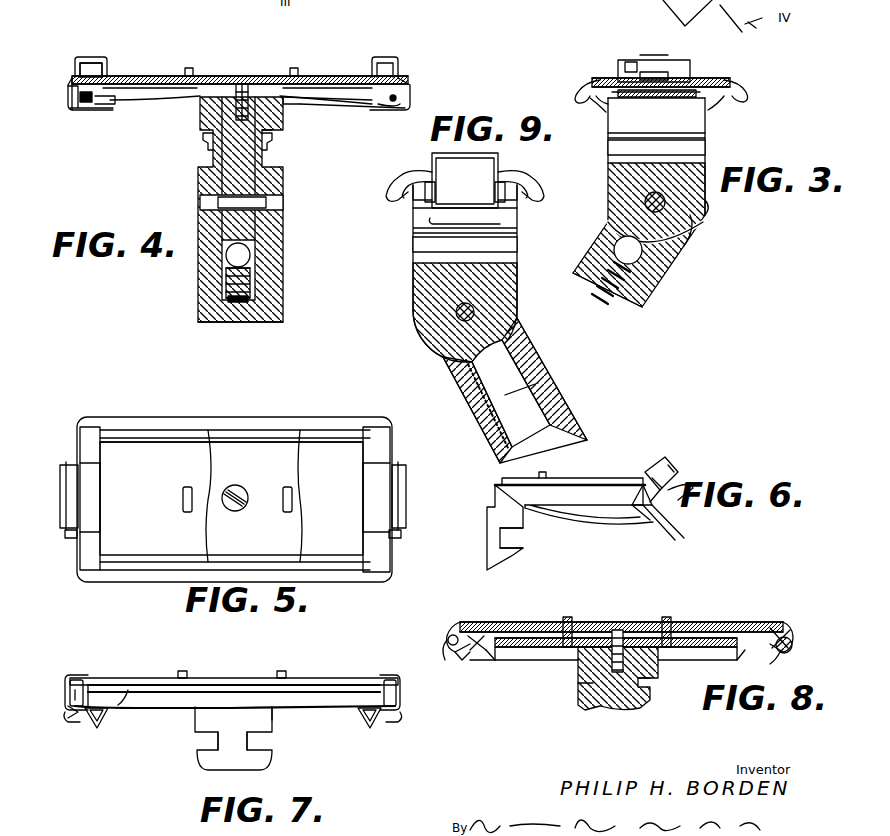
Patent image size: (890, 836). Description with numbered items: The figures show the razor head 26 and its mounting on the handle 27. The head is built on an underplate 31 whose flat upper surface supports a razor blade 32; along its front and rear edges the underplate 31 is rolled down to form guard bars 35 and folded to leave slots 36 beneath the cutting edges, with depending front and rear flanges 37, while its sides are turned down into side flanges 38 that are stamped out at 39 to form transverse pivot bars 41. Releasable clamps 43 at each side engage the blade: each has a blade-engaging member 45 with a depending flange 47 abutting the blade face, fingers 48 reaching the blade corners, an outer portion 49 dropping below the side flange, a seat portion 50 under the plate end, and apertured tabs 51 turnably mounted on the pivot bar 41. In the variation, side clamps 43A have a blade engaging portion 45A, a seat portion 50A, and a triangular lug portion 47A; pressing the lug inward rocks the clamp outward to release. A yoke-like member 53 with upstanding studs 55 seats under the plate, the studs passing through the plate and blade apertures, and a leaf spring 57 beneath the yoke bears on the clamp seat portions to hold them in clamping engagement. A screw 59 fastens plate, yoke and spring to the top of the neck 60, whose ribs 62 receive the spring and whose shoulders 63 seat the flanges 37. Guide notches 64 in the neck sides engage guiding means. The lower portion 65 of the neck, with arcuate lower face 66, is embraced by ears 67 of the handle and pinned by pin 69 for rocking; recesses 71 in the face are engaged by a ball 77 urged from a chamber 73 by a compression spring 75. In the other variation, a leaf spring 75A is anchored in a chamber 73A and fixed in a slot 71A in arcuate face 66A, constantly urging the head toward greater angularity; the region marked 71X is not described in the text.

In FIG. 4, the razor head 26 is at (211, 38).
In FIG. 3, the razor head 26 is at (746, 66).
In FIG. 5, the razor head 26 is at (245, 404).
In FIG. 7, the razor head 26 is at (326, 660).
In FIG. 4, the handle 27 is at (290, 292).
In FIG. 9, the handle 27 is at (580, 402).
In FIG. 3, the handle 27 is at (676, 298).
In FIG. 4, the underplate 31 is at (112, 90).
In FIG. 8, the underplate 31 is at (462, 625).
In FIG. 4, the razor blade 32 is at (240, 80).
In FIG. 3, the razor blade 32 is at (661, 82).
In FIG. 5, the razor blade 32 is at (128, 470).
In FIG. 6, the razor blade 32 is at (575, 484).
In FIG. 7, the razor blade 32 is at (112, 712).
In FIG. 8, the razor blade 32 is at (508, 623).
In FIG. 4, the guard bars 35 is at (272, 150).
In FIG. 9, the guard bars 35 is at (540, 190).
In FIG. 3, the guard bars 35 is at (582, 95).
In FIG. 5, the guard bars 35 is at (166, 576).
In FIG. 6, the guard bars 35 is at (588, 496).
In FIG. 7, the guard bars 35 is at (186, 705).
In FIG. 3, the slots 36 is at (600, 100).
In FIG. 5, the slots 36 is at (268, 440).
In FIG. 6, the slots 36 is at (538, 507).
In FIG. 7, the slots 36 is at (152, 700).
In FIG. 4, the front and rear flanges 37 is at (122, 102).
In FIG. 9, the front and rear flanges 37 is at (518, 200).
In FIG. 3, the front and rear flanges 37 is at (606, 108).
In FIG. 6, the side flanges 38 is at (652, 512).
In FIG. 7, the side flanges 38 is at (66, 708).
In FIG. 4, the stamped-out portion 39 is at (70, 88).
In FIG. 9, the stamped-out portion 39 is at (438, 192).
In FIG. 8, the stamped-out portion 39 is at (792, 636).
In FIG. 4, the pivot bars 41 is at (82, 106).
In FIG. 8, the pivot bars 41 is at (466, 656).
In FIG. 4, the releasable clamps 43 is at (408, 48).
In FIG. 3, the releasable clamps 43 is at (680, 44).
In FIG. 6, the releasable clamps 43 is at (689, 460).
In FIG. 7, the side clamps 43A is at (96, 663).
In FIG. 4, the blade-engaging member 45 is at (97, 57).
In FIG. 5, the blade-engaging member 45 is at (90, 500).
In FIG. 6, the blade-engaging member 45 is at (680, 478).
In FIG. 7, the blade engaging portion 45A is at (72, 672).
In FIG. 4, the depending flange 47 is at (107, 62).
In FIG. 3, the depending flange 47 is at (676, 60).
In FIG. 5, the depending flange 47 is at (104, 518).
In FIG. 7, the lug portion 47A is at (96, 730).
In FIG. 8, the lug portion 47A is at (492, 660).
In FIG. 9, the blade-engaging fingers 48 is at (410, 172).
In FIG. 5, the blade-engaging fingers 48 is at (90, 562).
In FIG. 6, the blade-engaging fingers 48 is at (652, 476).
In FIG. 8, the blade-engaging fingers 48 is at (448, 664).
In FIG. 4, the outer portion 49 is at (75, 62).
In FIG. 9, the outer portion 49 is at (465, 165).
In FIG. 5, the outer portion 49 is at (64, 498).
In FIG. 4, the seat portion 50 is at (392, 110).
In FIG. 9, the seat portion 50 is at (420, 210).
In FIG. 6, the seat portion 50 is at (637, 510).
In FIG. 8, the seat portion 50 is at (780, 660).
In FIG. 7, the seat portion 50A is at (104, 700).
In FIG. 8, the seat portion 50A is at (478, 664).
In FIG. 4, the tabs 51 is at (104, 108).
In FIG. 5, the tabs 51 is at (66, 538).
In FIG. 7, the tabs 51 is at (70, 722).
In FIG. 8, the tabs 51 is at (455, 650).
In FIG. 4, the yoke-like member 53 is at (206, 135).
In FIG. 3, the yoke-like member 53 is at (706, 112).
In FIG. 8, the yoke-like member 53 is at (652, 684).
In FIG. 4, the studs 55 is at (292, 68).
In FIG. 3, the studs 55 is at (650, 60).
In FIG. 5, the studs 55 is at (284, 490).
In FIG. 6, the studs 55 is at (545, 472).
In FIG. 7, the studs 55 is at (280, 671).
In FIG. 8, the studs 55 is at (664, 616).
In FIG. 4, the leaf spring member 57 is at (290, 104).
In FIG. 9, the leaf spring member 57 is at (448, 220).
In FIG. 3, the leaf spring member 57 is at (648, 100).
In FIG. 5, the leaf spring member 57 is at (60, 518).
In FIG. 6, the leaf spring member 57 is at (660, 522).
In FIG. 7, the leaf spring member 57 is at (342, 705).
In FIG. 8, the leaf spring member 57 is at (526, 648).
In FIG. 4, the screw 59 is at (258, 78).
In FIG. 5, the screw 59 is at (238, 511).
In FIG. 8, the screw 59 is at (612, 660).
In FIG. 4, the neck 60 is at (275, 135).
In FIG. 9, the neck 60 is at (416, 230).
In FIG. 6, the neck 60 is at (503, 550).
In FIG. 7, the neck 60 is at (255, 723).
In FIG. 8, the neck 60 is at (640, 716).
In FIG. 3, the front and rear ribs 62 is at (625, 100).
In FIG. 3, the front and rear shoulders 63 is at (606, 130).
In FIG. 4, the guide notches 64 is at (200, 150).
In FIG. 9, the guide notches 64 is at (500, 242).
In FIG. 3, the guide notches 64 is at (690, 146).
In FIG. 6, the guide notches 64 is at (520, 537).
In FIG. 7, the guide notches 64 is at (255, 738).
In FIG. 8, the guide notches 64 is at (578, 690).
In FIG. 9, the lower portion 65 is at (445, 285).
In FIG. 3, the arcuate lower face 66 is at (700, 236).
In FIG. 9, the arcuate face 66A is at (425, 348).
In FIG. 4, the ears 67 is at (200, 200).
In FIG. 4, the pin 69 is at (220, 204).
In FIG. 9, the pin 69 is at (456, 312).
In FIG. 3, the pin 69 is at (700, 222).
In FIG. 3, the recesses 71 is at (692, 244).
In FIG. 9, the recess or slot 71A is at (455, 356).
In FIG. 3, the bump 71X is at (708, 206).
In FIG. 4, the chamber 73 is at (232, 298).
In FIG. 3, the chamber 73 is at (606, 284).
In FIG. 9, the chamber 73A is at (508, 372).
In FIG. 4, the compression spring member 75 is at (240, 300).
In FIG. 3, the compression spring member 75 is at (606, 298).
In FIG. 9, the spring member 75A is at (520, 378).
In FIG. 4, the ball 77 is at (242, 258).
In FIG. 3, the ball 77 is at (625, 252).